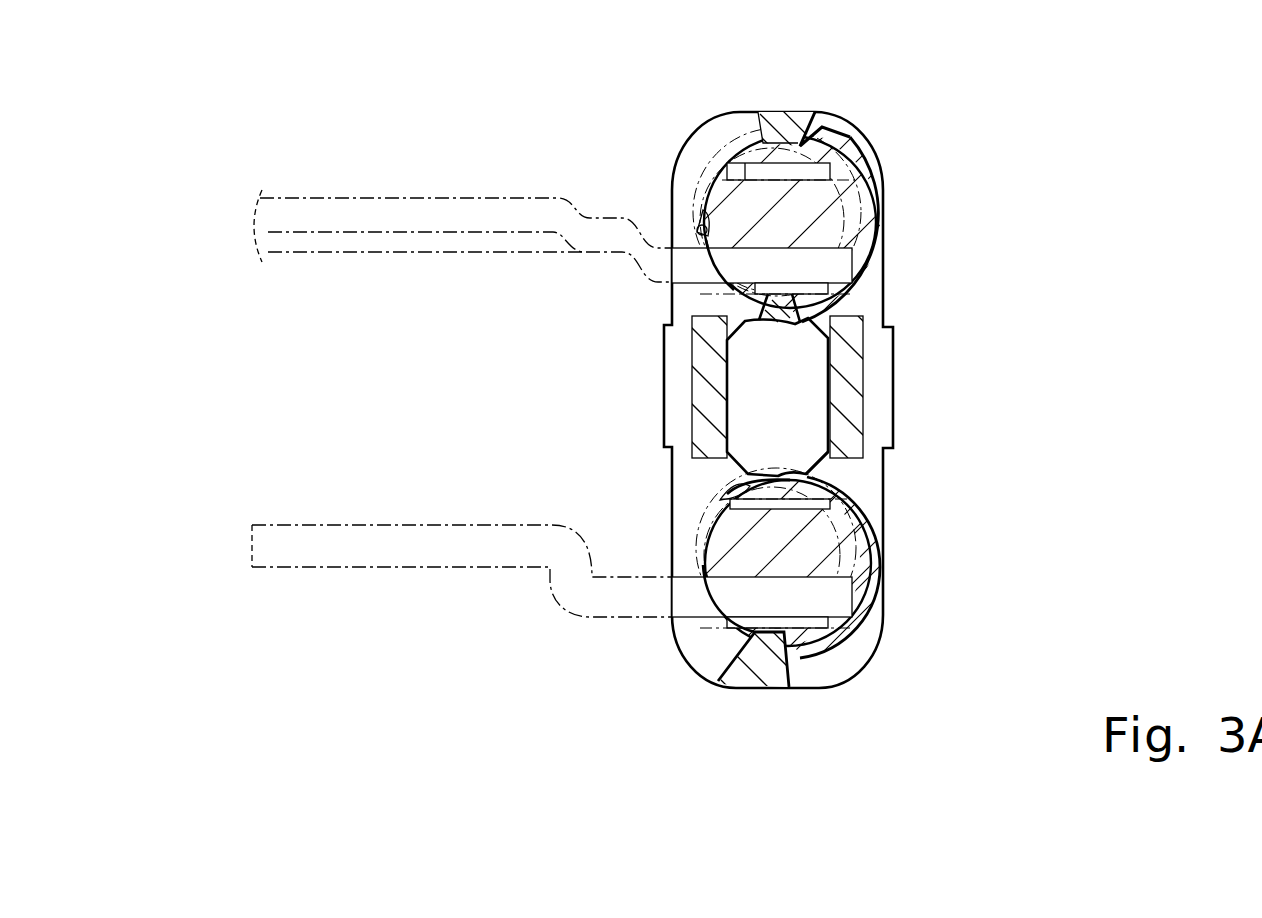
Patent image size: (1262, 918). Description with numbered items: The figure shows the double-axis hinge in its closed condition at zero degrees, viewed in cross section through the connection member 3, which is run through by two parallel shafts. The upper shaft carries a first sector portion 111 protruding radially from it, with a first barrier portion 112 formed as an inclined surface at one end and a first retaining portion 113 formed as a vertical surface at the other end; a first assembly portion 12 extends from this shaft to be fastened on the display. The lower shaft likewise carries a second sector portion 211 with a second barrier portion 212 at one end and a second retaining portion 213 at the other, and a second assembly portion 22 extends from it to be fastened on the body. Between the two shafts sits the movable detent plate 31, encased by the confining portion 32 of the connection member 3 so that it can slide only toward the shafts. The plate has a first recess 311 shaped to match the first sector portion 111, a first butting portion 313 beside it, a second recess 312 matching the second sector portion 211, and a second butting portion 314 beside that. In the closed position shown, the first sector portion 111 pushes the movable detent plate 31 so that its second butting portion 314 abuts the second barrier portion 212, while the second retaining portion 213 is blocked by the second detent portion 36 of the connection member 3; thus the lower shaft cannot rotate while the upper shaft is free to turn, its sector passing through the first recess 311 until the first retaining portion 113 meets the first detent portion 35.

The connection member 3 is at (694, 114).
The first assembly portion 12 is at (320, 212).
The second assembly portion 22 is at (405, 552).
The first detent portion 35 is at (778, 122).
The second detent portion 36 is at (765, 668).
The first sector portion 111 is at (882, 165).
The first barrier portion 112 is at (838, 133).
The first retaining portion 113 is at (840, 312).
The first recess 311 is at (660, 244).
The second recess 312 is at (745, 472).
The first butting portion 313 is at (706, 320).
The second butting portion 314 is at (845, 473).
The movable detent plate 31 is at (738, 379).
The confining portion 32 is at (855, 360).
The second sector portion 211 is at (872, 600).
The second barrier portion 212 is at (868, 518).
The second retaining portion 213 is at (818, 648).